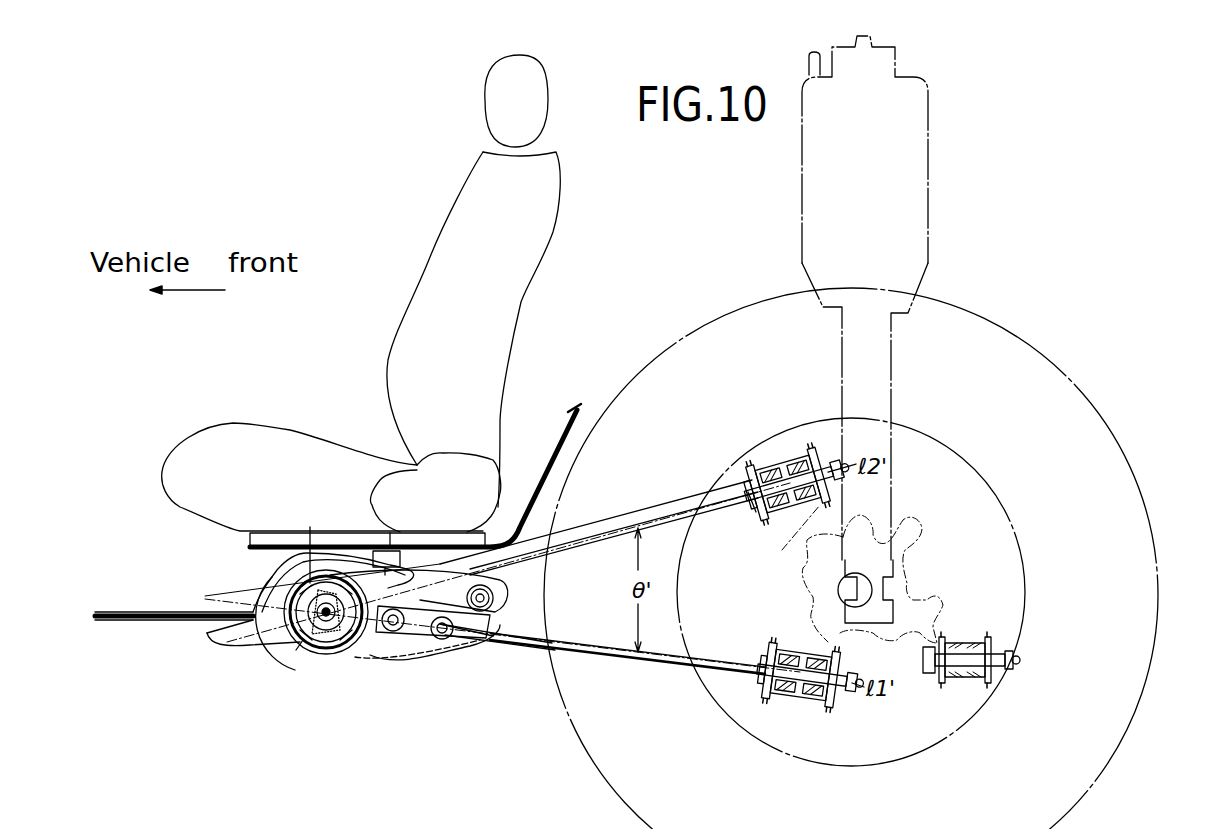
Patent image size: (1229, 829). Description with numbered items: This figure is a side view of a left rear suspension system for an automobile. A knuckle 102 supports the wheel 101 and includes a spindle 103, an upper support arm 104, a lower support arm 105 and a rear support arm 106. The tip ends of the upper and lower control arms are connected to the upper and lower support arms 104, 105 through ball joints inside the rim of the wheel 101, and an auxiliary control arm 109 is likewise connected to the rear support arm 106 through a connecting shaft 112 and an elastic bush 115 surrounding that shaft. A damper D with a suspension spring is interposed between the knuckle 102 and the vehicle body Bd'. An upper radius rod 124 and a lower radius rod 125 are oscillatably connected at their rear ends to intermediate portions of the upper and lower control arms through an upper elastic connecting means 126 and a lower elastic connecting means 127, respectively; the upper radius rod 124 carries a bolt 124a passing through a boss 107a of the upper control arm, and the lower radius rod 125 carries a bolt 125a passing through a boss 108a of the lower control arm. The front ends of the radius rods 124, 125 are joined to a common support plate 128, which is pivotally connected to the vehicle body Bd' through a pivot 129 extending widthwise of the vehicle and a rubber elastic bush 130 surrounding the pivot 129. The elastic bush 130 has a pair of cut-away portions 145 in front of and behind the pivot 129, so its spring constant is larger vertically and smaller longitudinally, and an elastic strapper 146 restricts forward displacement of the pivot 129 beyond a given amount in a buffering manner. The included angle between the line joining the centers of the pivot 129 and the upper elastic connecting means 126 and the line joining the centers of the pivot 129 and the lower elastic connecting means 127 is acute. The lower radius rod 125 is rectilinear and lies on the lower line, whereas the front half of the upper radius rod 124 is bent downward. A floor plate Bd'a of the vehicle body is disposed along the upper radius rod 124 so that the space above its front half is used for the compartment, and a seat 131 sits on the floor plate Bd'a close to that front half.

The wheel 101 is at (1030, 342).
The knuckle 102 is at (908, 557).
The spindle 103 is at (843, 582).
The upper support arm 104 is at (785, 536).
The lower support arm 105 is at (836, 646).
The rear support arm 106 is at (943, 678).
The boss 107a is at (779, 461).
The boss 108a is at (799, 704).
The auxiliary control arm 109 is at (958, 633).
The connecting shaft 112 is at (1004, 663).
The elastic bush 115 is at (967, 688).
The upper radius rod 124 is at (663, 520).
The bolt 124a is at (752, 507).
The lower radius rod 125 is at (620, 657).
The bolt 125a is at (763, 684).
The upper elastic connecting means 126 is at (758, 464).
The lower elastic connecting means 127 is at (768, 644).
The support plate 128 is at (417, 654).
The pivot 129 is at (294, 637).
The elastic bush 130 is at (323, 644).
The seat 131 is at (265, 426).
The cut-away portions 145 is at (287, 594).
The elastic strapper 146 is at (296, 672).
The damper D is at (930, 197).
The floor plate Bd'a is at (174, 593).
The vehicle body Bd' is at (133, 647).